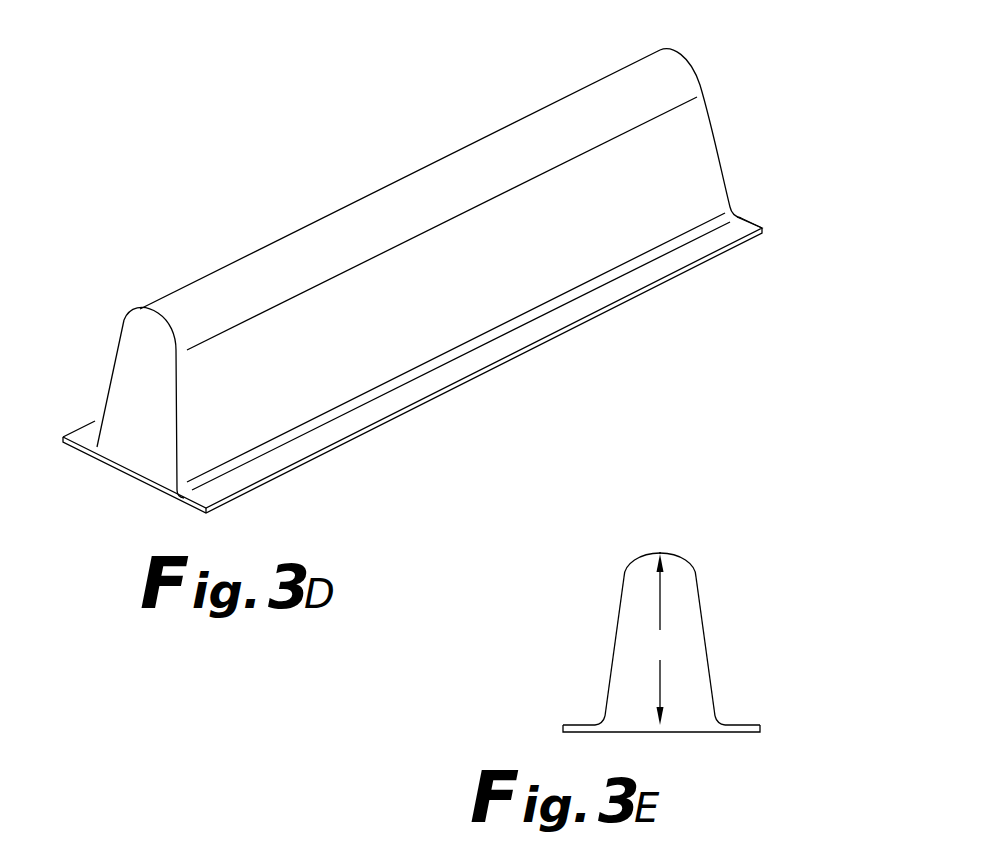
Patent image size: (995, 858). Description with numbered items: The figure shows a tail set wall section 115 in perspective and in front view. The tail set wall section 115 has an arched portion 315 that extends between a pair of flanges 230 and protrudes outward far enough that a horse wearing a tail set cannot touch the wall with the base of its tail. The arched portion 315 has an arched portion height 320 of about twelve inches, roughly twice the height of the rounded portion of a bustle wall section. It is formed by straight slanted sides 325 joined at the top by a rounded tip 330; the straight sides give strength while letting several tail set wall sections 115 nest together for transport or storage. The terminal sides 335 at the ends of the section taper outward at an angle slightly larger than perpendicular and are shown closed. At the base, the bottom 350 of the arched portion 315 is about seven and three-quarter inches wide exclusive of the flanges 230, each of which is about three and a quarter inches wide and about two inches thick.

In FIG. 3D, the tail set wall section 115 is at (404, 251).
In FIG. 3E, the tail set wall section 115 is at (686, 593).
In FIG. 3D, the flanges 230 is at (647, 273).
In FIG. 3E, the flanges 230 is at (580, 725).
In FIG. 3D, the arched portion 315 is at (563, 86).
In FIG. 3E, the arched portion 315 is at (704, 560).
In FIG. 3E, the arched portion height 320 is at (660, 639).
In FIG. 3D, the straight slanted sides 325 is at (112, 380).
In FIG. 3E, the straight slanted sides 325 is at (617, 623).
In FIG. 3D, the rounded tip 330 is at (408, 223).
In FIG. 3E, the rounded tip 330 is at (632, 561).
In FIG. 3D, the terminal sides 335 is at (158, 413).
In FIG. 3D, the bottom of arched portion 350 is at (124, 472).
In FIG. 3E, the bottom of arched portion 350 is at (685, 735).